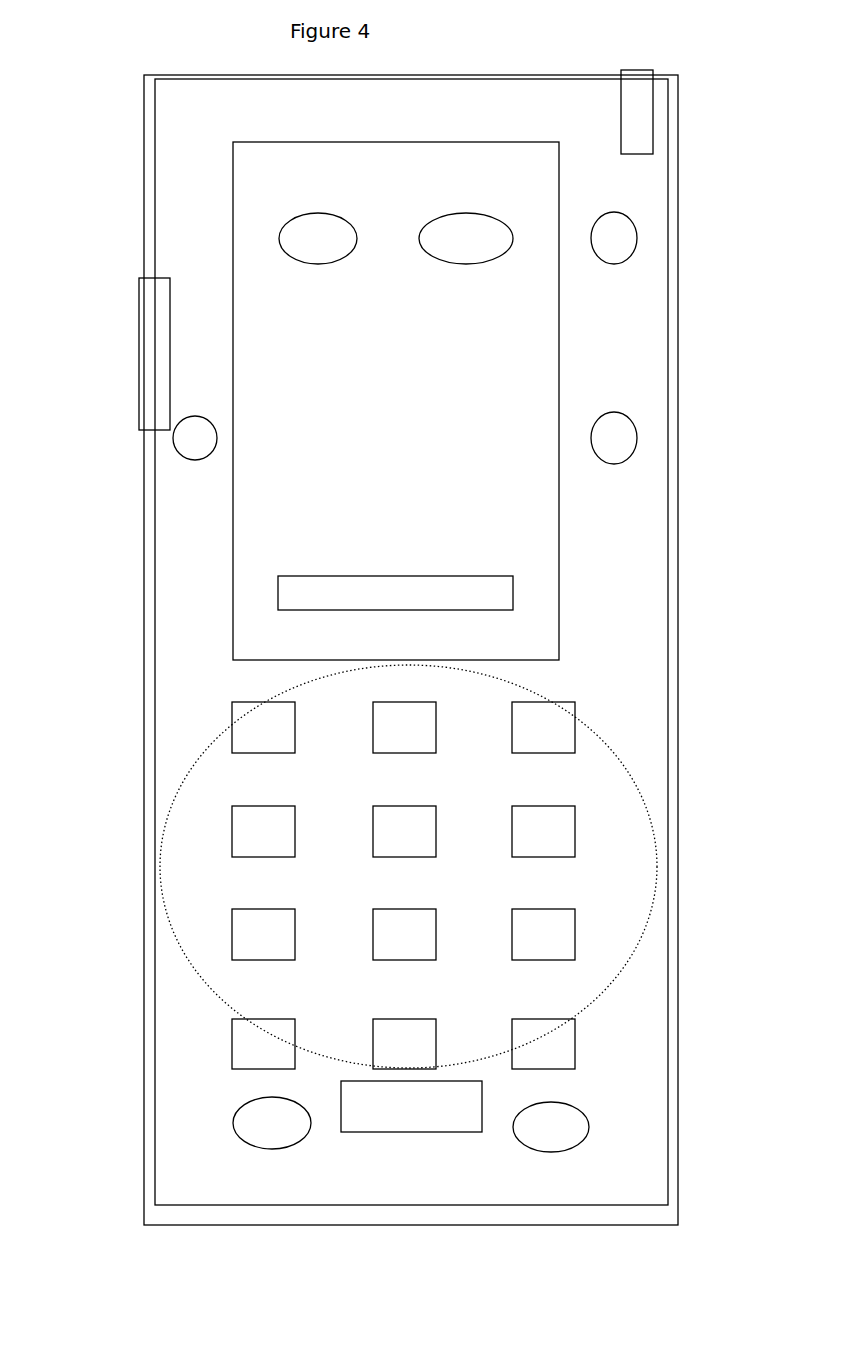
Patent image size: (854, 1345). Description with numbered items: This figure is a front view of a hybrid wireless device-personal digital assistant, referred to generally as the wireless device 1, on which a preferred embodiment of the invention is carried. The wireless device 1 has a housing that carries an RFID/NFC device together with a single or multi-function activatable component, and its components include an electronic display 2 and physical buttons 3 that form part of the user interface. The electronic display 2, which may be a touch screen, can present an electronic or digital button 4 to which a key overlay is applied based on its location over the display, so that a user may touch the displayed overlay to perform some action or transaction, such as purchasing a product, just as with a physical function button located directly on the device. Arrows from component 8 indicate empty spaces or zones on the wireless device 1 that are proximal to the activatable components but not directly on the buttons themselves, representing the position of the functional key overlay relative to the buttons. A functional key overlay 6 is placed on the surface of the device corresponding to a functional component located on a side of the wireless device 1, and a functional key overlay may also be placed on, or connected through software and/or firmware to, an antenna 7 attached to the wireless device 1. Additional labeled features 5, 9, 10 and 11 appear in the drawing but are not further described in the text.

The wireless device 1 is at (362, 617).
The electronic display 2 is at (398, 140).
The physical buttons 3 is at (597, 263).
The electronic or digital button 4 is at (344, 256).
The keypad key 5 is at (546, 759).
The functional key overlay 6 is at (133, 333).
The antenna 7 is at (640, 107).
The component indicating empty spaces or zones 8 is at (477, 885).
The bottom rectangular button 9 is at (338, 1091).
The touch sensitive circular area 10 is at (161, 857).
The housing 11 is at (147, 227).